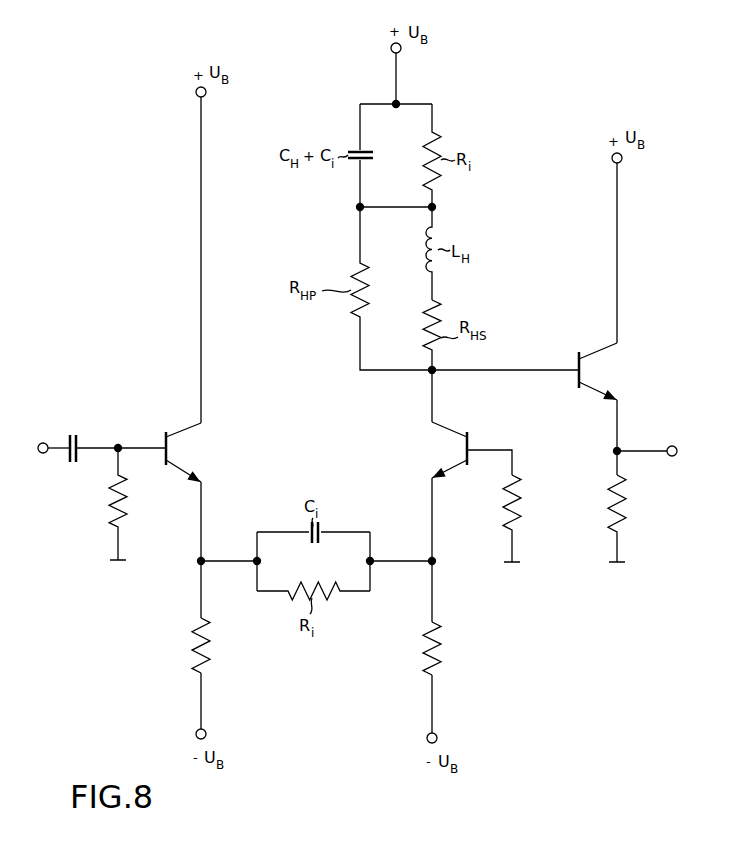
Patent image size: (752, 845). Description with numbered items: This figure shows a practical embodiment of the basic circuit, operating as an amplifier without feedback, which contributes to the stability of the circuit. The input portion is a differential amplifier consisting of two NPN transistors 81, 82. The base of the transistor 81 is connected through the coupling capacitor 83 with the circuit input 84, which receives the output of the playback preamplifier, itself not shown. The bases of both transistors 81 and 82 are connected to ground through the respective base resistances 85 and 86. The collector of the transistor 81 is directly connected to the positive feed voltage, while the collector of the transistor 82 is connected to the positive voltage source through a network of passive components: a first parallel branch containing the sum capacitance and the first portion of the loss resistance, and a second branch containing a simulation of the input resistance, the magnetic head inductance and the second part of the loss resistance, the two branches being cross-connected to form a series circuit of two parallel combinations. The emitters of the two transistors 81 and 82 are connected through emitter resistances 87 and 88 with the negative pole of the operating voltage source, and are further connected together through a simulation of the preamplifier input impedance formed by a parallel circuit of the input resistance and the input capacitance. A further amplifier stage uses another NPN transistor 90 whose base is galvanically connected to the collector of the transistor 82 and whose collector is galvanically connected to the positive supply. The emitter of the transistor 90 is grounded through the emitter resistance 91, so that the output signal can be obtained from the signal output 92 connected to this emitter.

The NPN transistor 81 is at (168, 445).
The NPN transistor 82 is at (462, 440).
The coupling capacitor 83 is at (73, 433).
The circuit input 84 is at (43, 443).
The base resistance 85 is at (110, 508).
The base resistance 86 is at (522, 506).
The emitter resistance 87 is at (193, 647).
The emitter resistance 88 is at (442, 660).
The NPN transistor 90 is at (583, 378).
The emitter resistance 91 is at (627, 510).
The signal output 92 is at (670, 446).